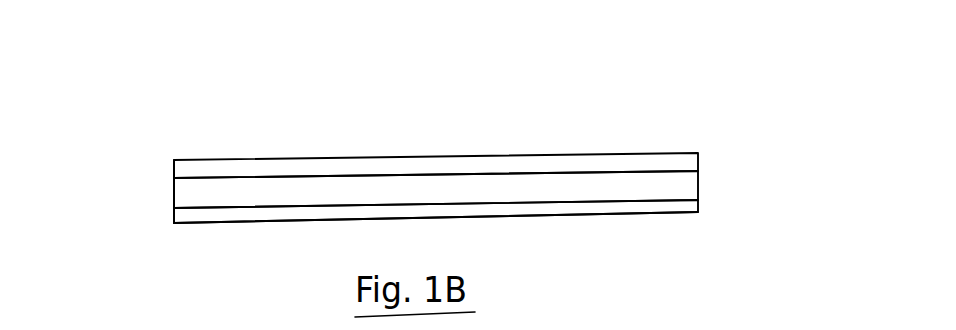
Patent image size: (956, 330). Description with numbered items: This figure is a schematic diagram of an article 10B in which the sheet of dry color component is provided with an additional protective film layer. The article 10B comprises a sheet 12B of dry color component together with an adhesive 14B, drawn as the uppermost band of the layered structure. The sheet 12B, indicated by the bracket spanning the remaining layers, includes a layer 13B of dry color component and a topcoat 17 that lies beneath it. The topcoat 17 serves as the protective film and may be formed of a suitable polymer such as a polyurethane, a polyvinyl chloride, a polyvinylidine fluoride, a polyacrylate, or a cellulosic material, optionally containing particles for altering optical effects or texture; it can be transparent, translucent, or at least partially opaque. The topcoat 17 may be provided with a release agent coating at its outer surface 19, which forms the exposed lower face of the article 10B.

The article 10B is at (735, 178).
The sheet of dry color component 12B is at (155, 185).
The adhesive 14B is at (683, 158).
The layer of dry color component 13B is at (688, 190).
The topcoat 17 is at (632, 208).
The outer surface 19 is at (568, 215).